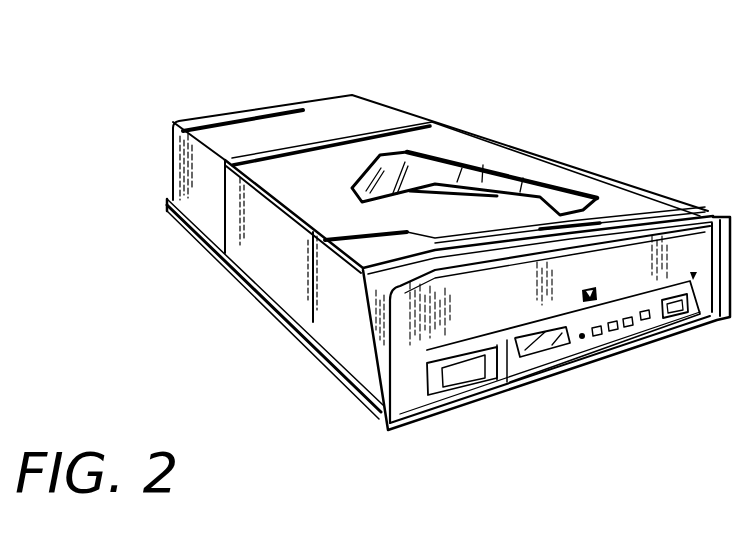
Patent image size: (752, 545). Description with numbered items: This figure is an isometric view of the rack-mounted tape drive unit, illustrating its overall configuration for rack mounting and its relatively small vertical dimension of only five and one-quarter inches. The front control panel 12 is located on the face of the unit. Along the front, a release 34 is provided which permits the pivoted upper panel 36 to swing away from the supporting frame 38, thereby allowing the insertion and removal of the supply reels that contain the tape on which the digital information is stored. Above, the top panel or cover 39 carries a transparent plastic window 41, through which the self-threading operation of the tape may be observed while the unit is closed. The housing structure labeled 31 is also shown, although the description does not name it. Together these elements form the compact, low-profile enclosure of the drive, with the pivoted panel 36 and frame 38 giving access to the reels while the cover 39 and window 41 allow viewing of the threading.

The front control panel 12 is at (622, 331).
The housing 31 is at (185, 171).
The release 34 is at (592, 300).
The pivoted upper panel 36 is at (557, 278).
The supporting frame 38 is at (403, 355).
The top panel or cover 39 is at (318, 186).
The transparent plastic window 41 is at (490, 150).